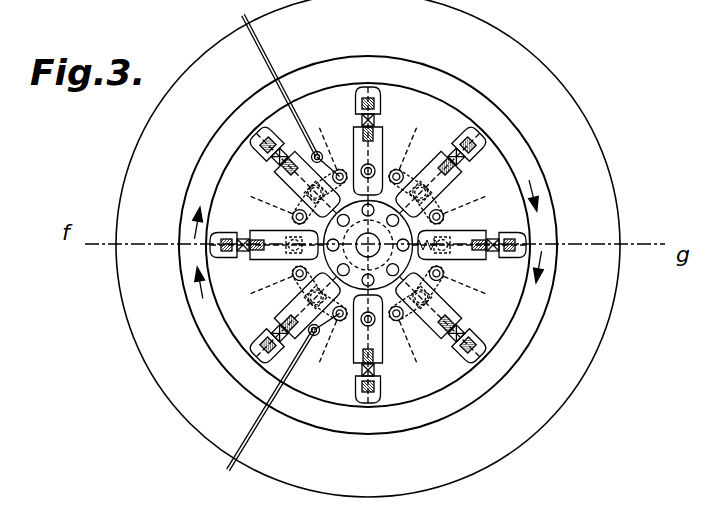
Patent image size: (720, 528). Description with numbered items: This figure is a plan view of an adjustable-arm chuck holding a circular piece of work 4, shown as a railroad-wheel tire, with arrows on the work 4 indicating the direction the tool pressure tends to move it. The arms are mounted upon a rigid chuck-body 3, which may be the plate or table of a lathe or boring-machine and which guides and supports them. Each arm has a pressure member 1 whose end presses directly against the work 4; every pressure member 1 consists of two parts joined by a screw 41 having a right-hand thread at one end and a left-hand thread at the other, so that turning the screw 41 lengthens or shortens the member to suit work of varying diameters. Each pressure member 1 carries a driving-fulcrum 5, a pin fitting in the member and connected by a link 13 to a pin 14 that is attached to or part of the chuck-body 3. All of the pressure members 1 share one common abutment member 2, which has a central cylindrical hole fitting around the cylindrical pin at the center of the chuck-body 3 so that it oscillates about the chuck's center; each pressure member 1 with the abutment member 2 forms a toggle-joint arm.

The pressure member 1 is at (381, 100).
The abutment member 2 is at (368, 244).
The chuck-body 3 is at (394, 170).
The work 4 is at (368, 248).
The driving-fulcrum 5 is at (368, 245).
The link 13 is at (359, 264).
The pin 14 is at (364, 248).
The screw 41 is at (377, 120).